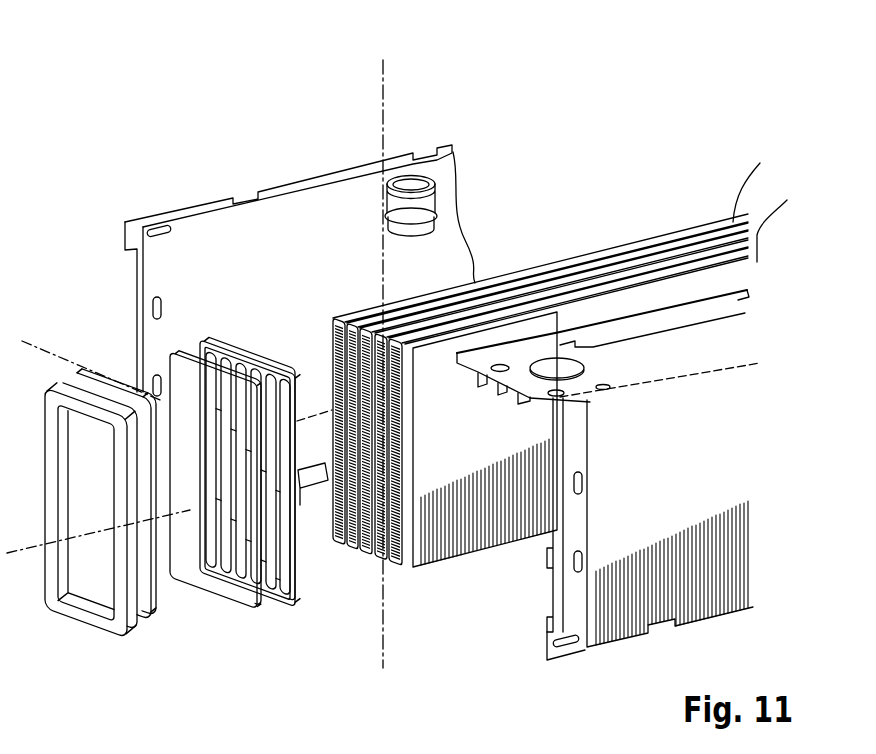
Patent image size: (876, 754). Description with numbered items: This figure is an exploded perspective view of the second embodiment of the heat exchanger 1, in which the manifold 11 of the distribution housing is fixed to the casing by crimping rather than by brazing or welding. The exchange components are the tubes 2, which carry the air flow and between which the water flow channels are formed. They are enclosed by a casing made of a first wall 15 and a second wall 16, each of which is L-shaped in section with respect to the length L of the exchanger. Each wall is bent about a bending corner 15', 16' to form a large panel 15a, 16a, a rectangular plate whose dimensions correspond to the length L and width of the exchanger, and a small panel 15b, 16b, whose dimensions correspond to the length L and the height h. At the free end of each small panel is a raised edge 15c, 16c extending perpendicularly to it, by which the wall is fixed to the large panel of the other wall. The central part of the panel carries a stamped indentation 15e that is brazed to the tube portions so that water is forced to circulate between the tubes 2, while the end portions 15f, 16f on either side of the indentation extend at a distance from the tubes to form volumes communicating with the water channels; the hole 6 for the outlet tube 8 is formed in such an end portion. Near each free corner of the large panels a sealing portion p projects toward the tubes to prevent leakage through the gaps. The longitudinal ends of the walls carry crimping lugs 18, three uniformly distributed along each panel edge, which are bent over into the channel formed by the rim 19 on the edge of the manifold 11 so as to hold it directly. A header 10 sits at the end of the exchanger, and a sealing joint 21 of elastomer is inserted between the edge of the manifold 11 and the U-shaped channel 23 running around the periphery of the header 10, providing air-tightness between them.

The heat exchanger 1 is at (614, 101).
The tubes 2 is at (560, 353).
The hole 6 is at (557, 372).
The outlet tube 8 is at (414, 180).
The header 10 is at (241, 482).
The manifold 11 is at (133, 630).
The first wall 15 is at (627, 425).
The large panel 15a is at (718, 450).
The small panel 15b is at (730, 347).
The raised edge 15c is at (733, 303).
The bending corner 15' is at (689, 380).
The indentation 15e is at (655, 362).
The end portion 15f is at (520, 314).
The second wall 16 is at (286, 365).
The large panel 16a is at (302, 196).
The small panel 16b is at (300, 488).
The raised edge 16c is at (298, 520).
The end portion 16f is at (137, 392).
The bending corner 16' is at (300, 356).
The crimping lugs 18 is at (503, 381).
The rim 19 is at (155, 638).
The sealing joint 21 is at (203, 598).
The channel 23 is at (200, 340).
The sealing portion p is at (158, 227).
The height h is at (36, 341).
The length L is at (13, 557).